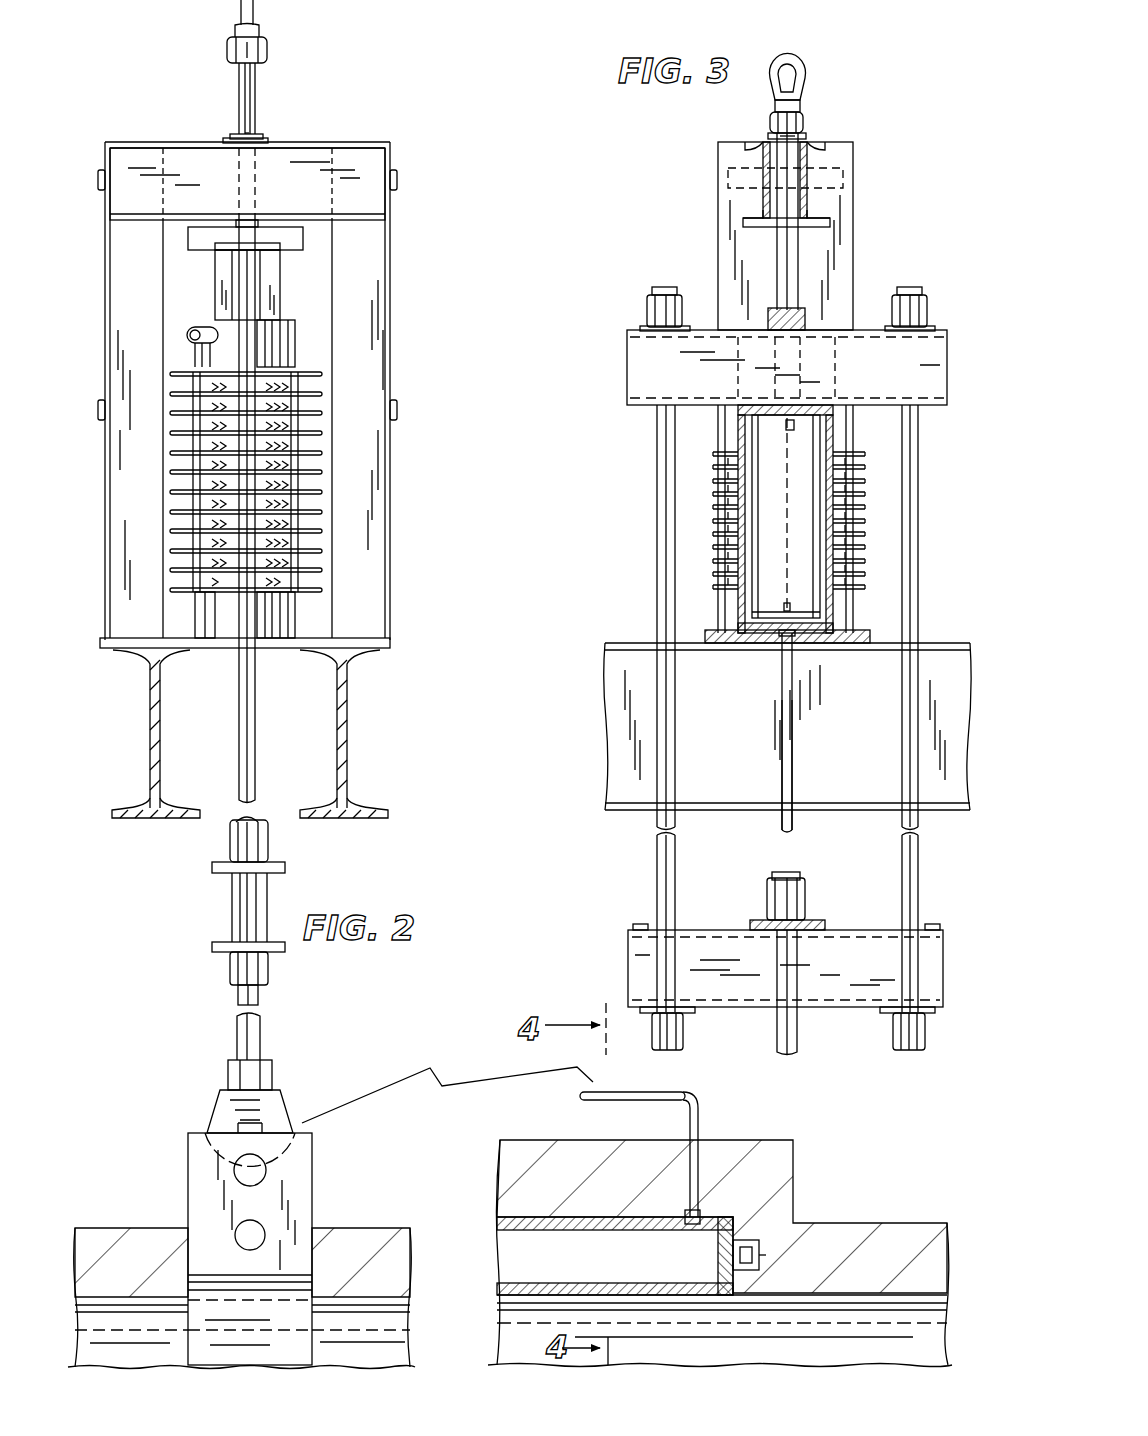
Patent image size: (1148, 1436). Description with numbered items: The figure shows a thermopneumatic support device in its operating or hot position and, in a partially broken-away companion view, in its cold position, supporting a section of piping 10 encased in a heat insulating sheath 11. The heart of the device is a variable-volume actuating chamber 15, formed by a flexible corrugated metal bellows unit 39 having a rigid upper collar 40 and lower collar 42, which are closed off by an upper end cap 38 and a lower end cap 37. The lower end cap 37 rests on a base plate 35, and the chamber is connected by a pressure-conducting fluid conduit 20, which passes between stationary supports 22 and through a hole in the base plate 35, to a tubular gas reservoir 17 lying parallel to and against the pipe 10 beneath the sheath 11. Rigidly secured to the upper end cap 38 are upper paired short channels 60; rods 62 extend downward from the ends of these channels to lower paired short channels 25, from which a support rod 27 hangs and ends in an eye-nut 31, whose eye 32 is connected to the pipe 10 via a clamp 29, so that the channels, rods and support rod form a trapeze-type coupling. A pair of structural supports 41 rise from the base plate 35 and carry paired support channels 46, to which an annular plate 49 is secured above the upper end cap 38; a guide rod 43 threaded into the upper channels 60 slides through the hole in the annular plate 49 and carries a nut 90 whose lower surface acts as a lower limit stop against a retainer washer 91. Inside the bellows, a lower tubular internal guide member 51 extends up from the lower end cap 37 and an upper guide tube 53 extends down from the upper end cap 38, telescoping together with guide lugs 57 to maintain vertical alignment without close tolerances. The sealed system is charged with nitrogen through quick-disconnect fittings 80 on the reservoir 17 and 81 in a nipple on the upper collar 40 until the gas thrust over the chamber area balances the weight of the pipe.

In FIG. 2, the piping section 10 is at (152, 1368).
In FIG. 2, the heat insulating sheath 11 is at (137, 1238).
In FIG. 2, the variable-volume actuating chamber 15 is at (220, 482).
In FIG. 3, the variable-volume actuating chamber 15 is at (770, 516).
In FIG. 2, the gas reservoir 17 is at (505, 1224).
In FIG. 2, the pressure-conducting fluid conduit 20 is at (604, 1098).
In FIG. 3, the pressure-conducting fluid conduit 20 is at (783, 832).
In FIG. 2, the stationary supports 22 is at (150, 722).
In FIG. 3, the stationary supports 22 is at (621, 733).
In FIG. 2, the lower paired short channels 25 is at (232, 908).
In FIG. 3, the lower paired short channels 25 is at (628, 946).
In FIG. 2, the support rod 27 is at (237, 1033).
In FIG. 3, the support rod 27 is at (798, 1036).
In FIG. 2, the clamp 29 is at (289, 1249).
In FIG. 2, the eye-nut 31 is at (221, 1107).
In FIG. 2, the eye-nut 32 is at (260, 1166).
In FIG. 3, the base plate 35 is at (712, 644).
In FIG. 3, the lower end cap 37 is at (767, 646).
In FIG. 3, the upper end cap 38 is at (794, 435).
In FIG. 2, the metal bellows unit 39 is at (312, 456).
In FIG. 3, the metal bellows unit 39 is at (716, 465).
In FIG. 2, the upper collar 40 is at (291, 337).
In FIG. 2, the structural supports 41 is at (109, 341).
In FIG. 3, the structural supports 41 is at (722, 262).
In FIG. 2, the lower collar 42 is at (297, 634).
In FIG. 3, the lower collar 42 is at (736, 612).
In FIG. 2, the guide rod 43 is at (238, 100).
In FIG. 3, the guide rod 43 is at (795, 266).
In FIG. 2, the support channels 46 is at (300, 197).
In FIG. 3, the support channels 46 is at (766, 198).
In FIG. 2, the annular plate 49 is at (270, 142).
In FIG. 3, the annular plate 49 is at (768, 141).
In FIG. 3, the lower tubular internal guide member 51 is at (830, 572).
In FIG. 3, the upper guide tube 53 is at (768, 506).
In FIG. 3, the guide lugs 57 is at (759, 618).
In FIG. 2, the upper paired short channels 60 is at (276, 301).
In FIG. 3, the upper paired short channels 60 is at (627, 389).
In FIG. 2, the rods 62 is at (256, 730).
In FIG. 3, the rods 62 is at (657, 590).
In FIG. 2, the quick-disconnect fitting 80 is at (772, 1242).
In FIG. 2, the nipple 81 is at (211, 326).
In FIG. 2, the nut 90 is at (268, 52).
In FIG. 3, the nut 90 is at (805, 125).
In FIG. 2, the retainer washer 91 is at (263, 132).
In FIG. 3, the retainer washer 91 is at (766, 131).